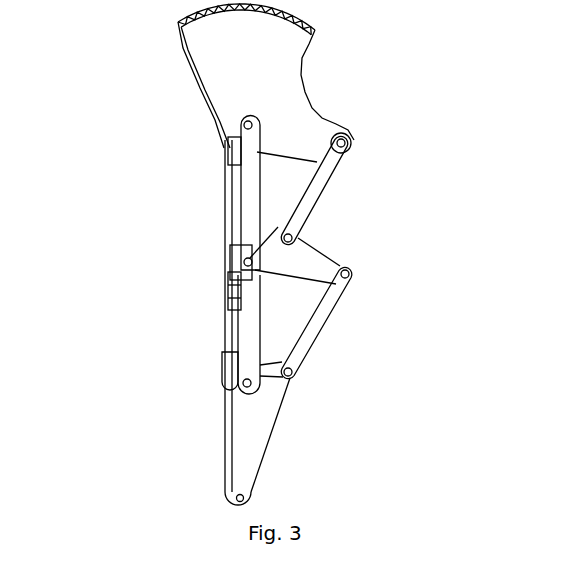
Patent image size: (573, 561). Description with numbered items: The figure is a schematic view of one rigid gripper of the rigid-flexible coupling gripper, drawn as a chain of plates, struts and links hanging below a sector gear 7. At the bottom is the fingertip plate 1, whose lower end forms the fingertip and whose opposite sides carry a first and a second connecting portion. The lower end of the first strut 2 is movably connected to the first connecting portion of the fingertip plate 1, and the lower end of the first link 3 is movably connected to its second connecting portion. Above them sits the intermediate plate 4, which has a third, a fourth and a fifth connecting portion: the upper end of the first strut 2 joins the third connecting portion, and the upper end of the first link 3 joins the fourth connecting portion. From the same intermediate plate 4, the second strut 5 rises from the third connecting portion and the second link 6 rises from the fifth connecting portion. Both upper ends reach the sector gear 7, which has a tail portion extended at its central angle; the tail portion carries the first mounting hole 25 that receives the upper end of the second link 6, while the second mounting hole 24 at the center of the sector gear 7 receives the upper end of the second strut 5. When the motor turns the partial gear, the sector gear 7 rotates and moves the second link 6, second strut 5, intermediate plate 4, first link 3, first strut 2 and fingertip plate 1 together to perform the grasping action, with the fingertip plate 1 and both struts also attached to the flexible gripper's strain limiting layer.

The fingertip plate 1 is at (237, 418).
The first strut 2 is at (237, 324).
The first link 3 is at (313, 323).
The intermediate plate 4 is at (303, 259).
The second strut 5 is at (230, 193).
The second link 6 is at (308, 194).
The sector gear 7 is at (220, 65).
The second mounting hole 24 is at (246, 128).
The first mounting hole 25 is at (345, 143).